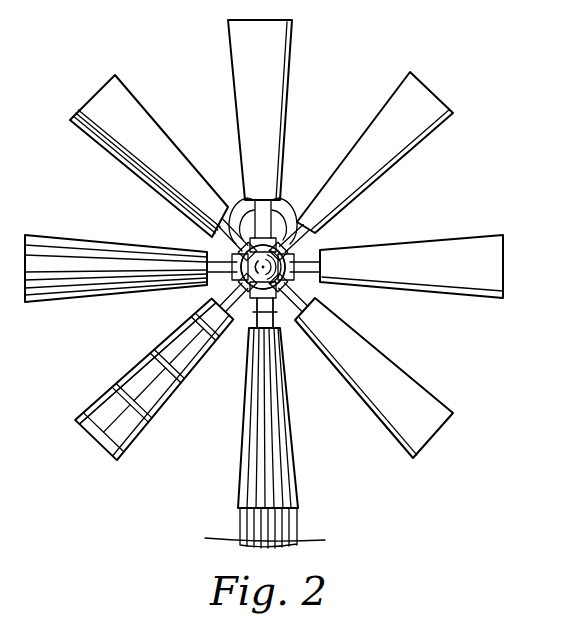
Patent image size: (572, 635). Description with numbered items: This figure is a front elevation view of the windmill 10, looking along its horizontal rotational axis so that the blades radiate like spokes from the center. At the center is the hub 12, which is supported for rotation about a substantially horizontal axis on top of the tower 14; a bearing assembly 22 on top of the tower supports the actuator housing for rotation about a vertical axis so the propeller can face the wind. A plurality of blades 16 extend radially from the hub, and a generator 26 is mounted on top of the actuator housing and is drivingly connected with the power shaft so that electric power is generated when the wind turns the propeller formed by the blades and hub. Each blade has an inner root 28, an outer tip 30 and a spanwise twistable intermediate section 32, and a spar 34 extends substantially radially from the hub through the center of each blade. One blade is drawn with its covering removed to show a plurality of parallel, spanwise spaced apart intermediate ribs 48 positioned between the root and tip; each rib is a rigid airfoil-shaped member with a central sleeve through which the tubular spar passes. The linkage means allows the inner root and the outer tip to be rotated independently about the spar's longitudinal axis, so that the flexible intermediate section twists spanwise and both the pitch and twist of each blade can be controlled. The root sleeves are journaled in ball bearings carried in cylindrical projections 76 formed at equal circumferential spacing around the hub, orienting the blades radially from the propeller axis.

The windmill 10 is at (316, 104).
The hub 12 is at (300, 284).
The tower 14 is at (298, 518).
The blade 16 is at (432, 130).
The bearing assembly 22 is at (250, 322).
The generator 26 is at (290, 200).
The inner root 28 is at (210, 296).
The outer tip 30 is at (136, 388).
The spanwise twistable intermediate section 32 is at (145, 355).
The spar 34 is at (125, 437).
The intermediate rib 48 is at (112, 403).
The cylindrical projection 76 is at (240, 258).